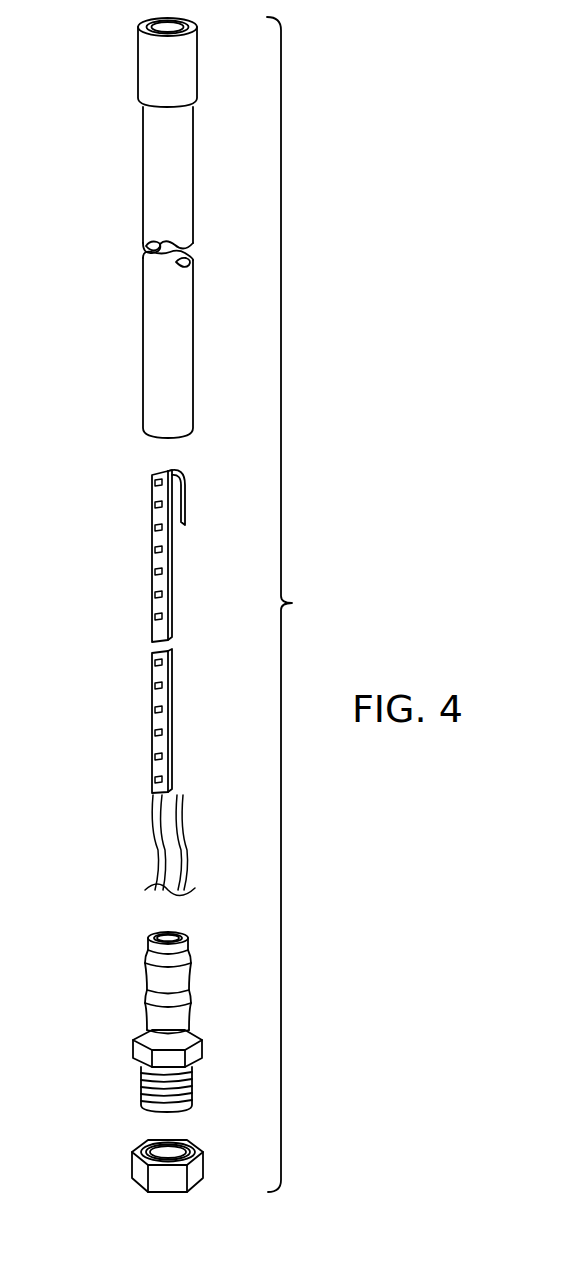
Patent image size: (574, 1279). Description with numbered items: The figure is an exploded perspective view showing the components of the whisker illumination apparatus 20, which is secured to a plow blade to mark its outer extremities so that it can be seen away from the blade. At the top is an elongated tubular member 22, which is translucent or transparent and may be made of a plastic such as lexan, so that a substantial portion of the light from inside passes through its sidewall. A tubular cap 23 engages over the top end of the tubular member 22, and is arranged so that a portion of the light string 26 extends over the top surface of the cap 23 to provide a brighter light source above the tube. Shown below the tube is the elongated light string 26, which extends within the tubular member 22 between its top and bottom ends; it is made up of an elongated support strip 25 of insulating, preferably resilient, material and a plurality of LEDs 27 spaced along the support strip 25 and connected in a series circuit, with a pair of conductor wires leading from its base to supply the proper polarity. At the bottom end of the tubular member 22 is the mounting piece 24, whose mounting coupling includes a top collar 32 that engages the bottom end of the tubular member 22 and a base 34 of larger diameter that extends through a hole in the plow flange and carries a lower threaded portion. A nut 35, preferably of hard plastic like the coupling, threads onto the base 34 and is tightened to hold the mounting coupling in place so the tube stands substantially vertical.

The whisker illumination apparatus 20 is at (295, 604).
The elongated tubular member 22 is at (135, 338).
The tubular cap 23 is at (138, 72).
The mounting piece 24 is at (146, 1022).
The elongated support strip 25 is at (157, 673).
The light string 26 is at (137, 641).
The LEDs 27 is at (155, 594).
The top collar 32 is at (150, 975).
The base 34 is at (197, 1048).
The nut 35 is at (122, 1175).